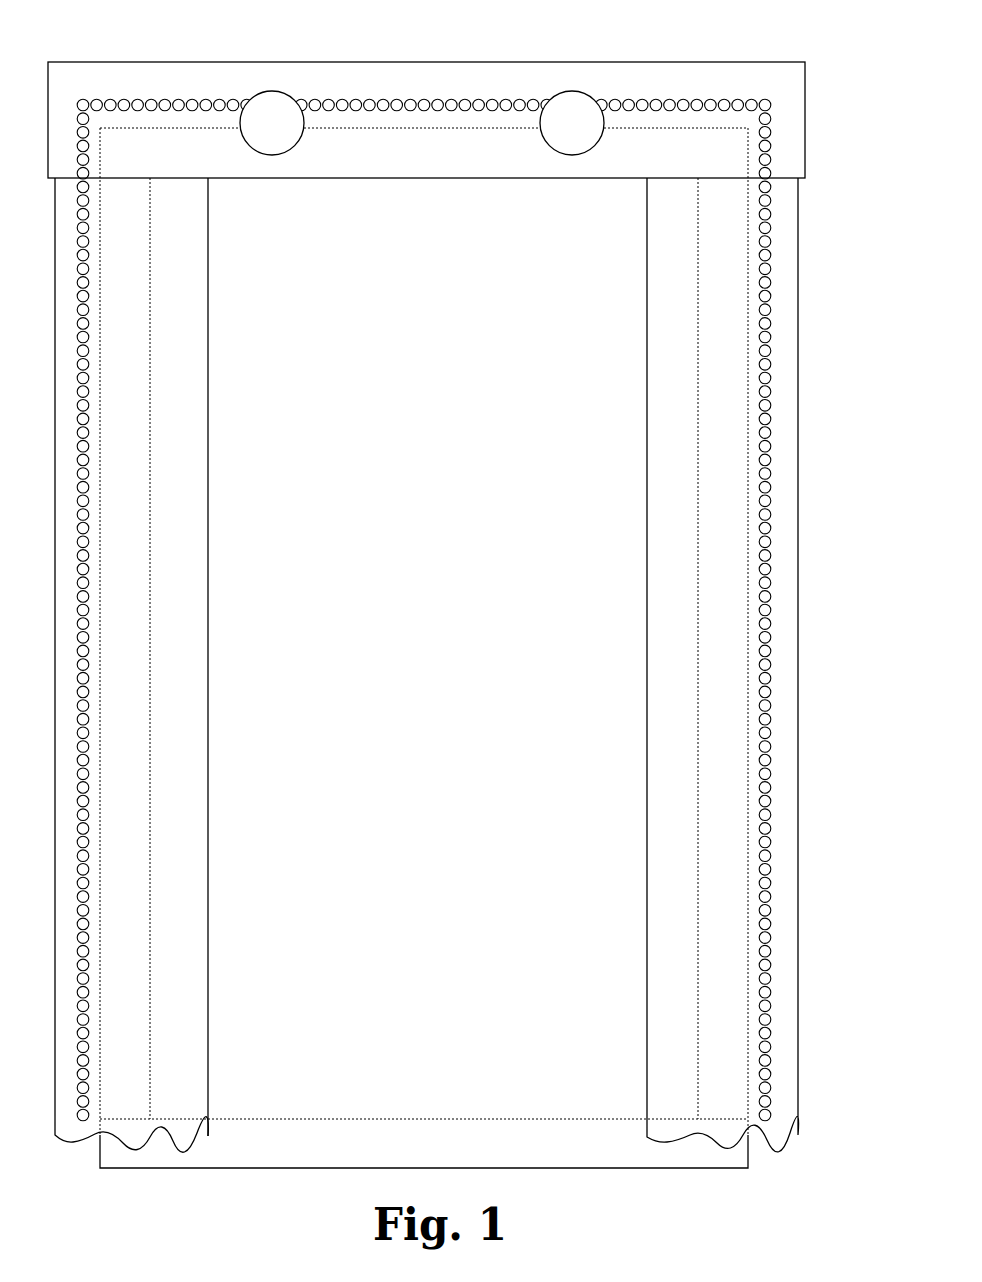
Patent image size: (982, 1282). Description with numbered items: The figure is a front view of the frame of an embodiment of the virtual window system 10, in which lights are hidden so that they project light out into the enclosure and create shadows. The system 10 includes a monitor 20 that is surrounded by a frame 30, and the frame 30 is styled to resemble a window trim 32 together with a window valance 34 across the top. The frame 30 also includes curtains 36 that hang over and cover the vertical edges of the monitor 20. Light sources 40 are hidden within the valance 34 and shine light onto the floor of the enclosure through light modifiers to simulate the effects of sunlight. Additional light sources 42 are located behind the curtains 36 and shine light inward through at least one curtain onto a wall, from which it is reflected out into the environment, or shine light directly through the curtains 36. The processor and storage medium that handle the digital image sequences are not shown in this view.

The virtual window system 10 is at (454, 585).
The monitor 20 is at (603, 320).
The frame 30 is at (718, 615).
The window trim 32 is at (720, 877).
The window valance 34 is at (707, 88).
The curtains 36 is at (208, 845).
The light sources 40 is at (545, 132).
The additional light sources 42 is at (87, 622).